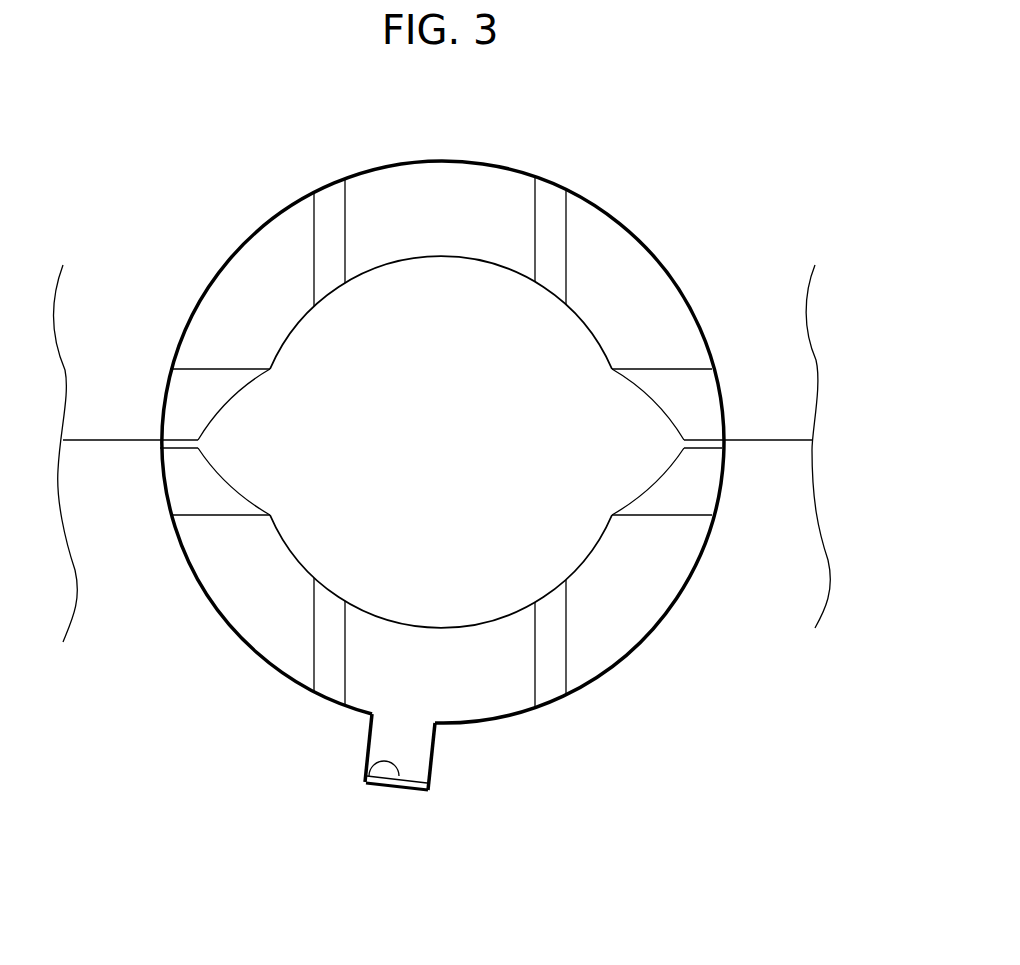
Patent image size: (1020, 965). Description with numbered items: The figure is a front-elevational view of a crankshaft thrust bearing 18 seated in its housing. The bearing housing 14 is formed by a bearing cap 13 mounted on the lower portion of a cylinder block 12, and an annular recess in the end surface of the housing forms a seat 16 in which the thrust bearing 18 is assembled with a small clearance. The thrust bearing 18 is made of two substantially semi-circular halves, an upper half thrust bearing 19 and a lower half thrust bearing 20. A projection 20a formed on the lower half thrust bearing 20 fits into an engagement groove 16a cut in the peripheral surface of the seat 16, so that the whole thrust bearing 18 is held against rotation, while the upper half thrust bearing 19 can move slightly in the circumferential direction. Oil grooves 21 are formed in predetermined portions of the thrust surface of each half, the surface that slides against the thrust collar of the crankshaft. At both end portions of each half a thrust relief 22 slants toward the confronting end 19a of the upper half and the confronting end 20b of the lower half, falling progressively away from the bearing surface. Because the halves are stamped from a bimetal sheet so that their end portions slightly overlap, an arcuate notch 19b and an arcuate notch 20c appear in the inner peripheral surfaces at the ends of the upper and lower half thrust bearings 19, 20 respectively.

The cylinder block 12 is at (803, 379).
The bearing cap 13 is at (803, 553).
The bearing housing 14 is at (812, 327).
The seat 16 is at (629, 238).
The engagement groove 16a is at (368, 763).
The thrust bearing 18 is at (621, 194).
The upper half thrust bearing 19 is at (241, 263).
The confronting end 19a is at (712, 442).
The arcuate notch 19b is at (232, 388).
The lower half thrust bearing 20 is at (638, 617).
The projection 20a is at (417, 750).
The confronting end 20b is at (168, 440).
The arcuate notch 20c is at (230, 492).
The oil groove 21 is at (332, 197).
The thrust relief 22 is at (170, 392).